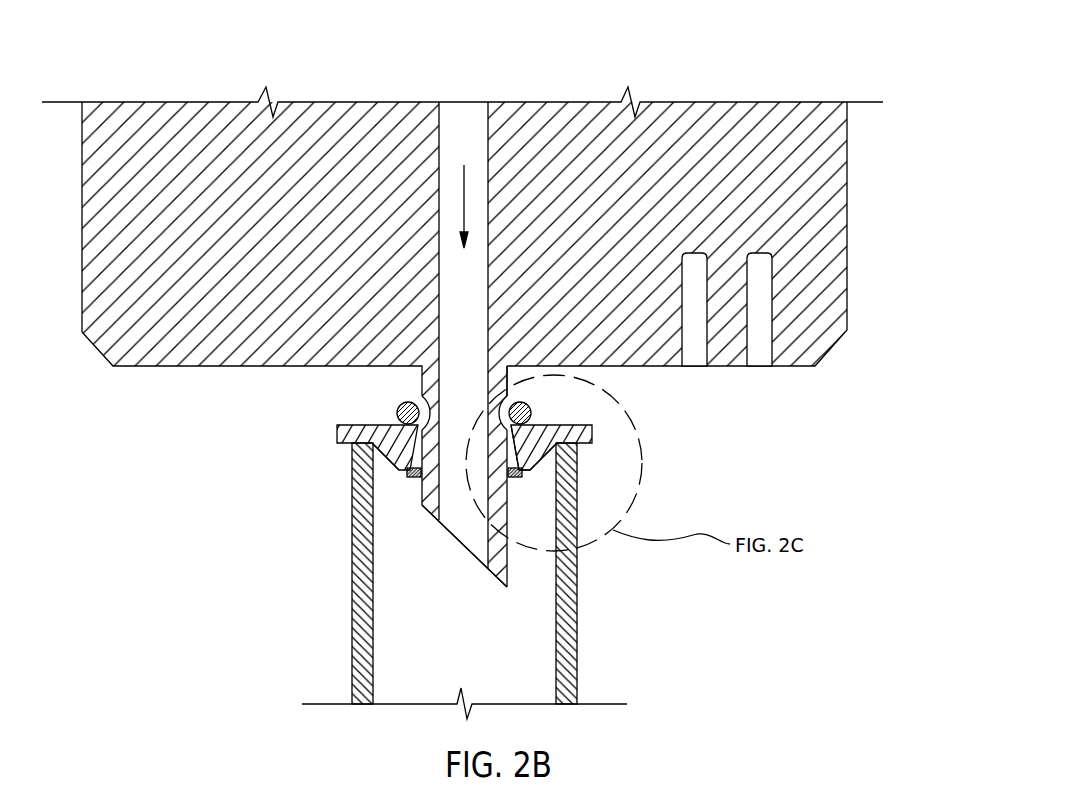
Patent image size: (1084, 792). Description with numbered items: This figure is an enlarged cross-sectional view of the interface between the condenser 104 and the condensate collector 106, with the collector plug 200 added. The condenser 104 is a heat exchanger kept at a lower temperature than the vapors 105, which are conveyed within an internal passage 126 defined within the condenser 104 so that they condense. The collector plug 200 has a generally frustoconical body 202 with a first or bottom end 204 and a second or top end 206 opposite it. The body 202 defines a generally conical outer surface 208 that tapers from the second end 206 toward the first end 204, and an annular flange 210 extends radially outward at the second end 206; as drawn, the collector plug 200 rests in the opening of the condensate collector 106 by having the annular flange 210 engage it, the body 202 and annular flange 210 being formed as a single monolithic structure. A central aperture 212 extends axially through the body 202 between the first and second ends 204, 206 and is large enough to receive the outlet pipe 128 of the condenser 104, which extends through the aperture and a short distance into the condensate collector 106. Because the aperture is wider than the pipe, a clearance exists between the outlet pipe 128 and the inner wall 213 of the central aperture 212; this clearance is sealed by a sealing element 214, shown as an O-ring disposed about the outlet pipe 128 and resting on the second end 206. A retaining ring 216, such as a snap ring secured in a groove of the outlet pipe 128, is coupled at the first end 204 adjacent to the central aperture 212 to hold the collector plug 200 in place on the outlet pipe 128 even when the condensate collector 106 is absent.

The condenser 104 is at (847, 212).
The vapors 105 is at (467, 197).
The internal passage 126 is at (490, 127).
The condensate collector 106 is at (577, 668).
The outlet pipe 128 is at (508, 578).
The collector plug 200 is at (389, 465).
The frustoconical body 202 is at (525, 478).
The first end 204 is at (394, 472).
The second end 206 is at (338, 425).
The conical outer surface 208 is at (578, 468).
The annular flange 210 is at (591, 437).
The central aperture 212 is at (528, 427).
The inner wall 213 is at (422, 403).
The sealing element 214 is at (532, 410).
The retaining ring 216 is at (523, 478).